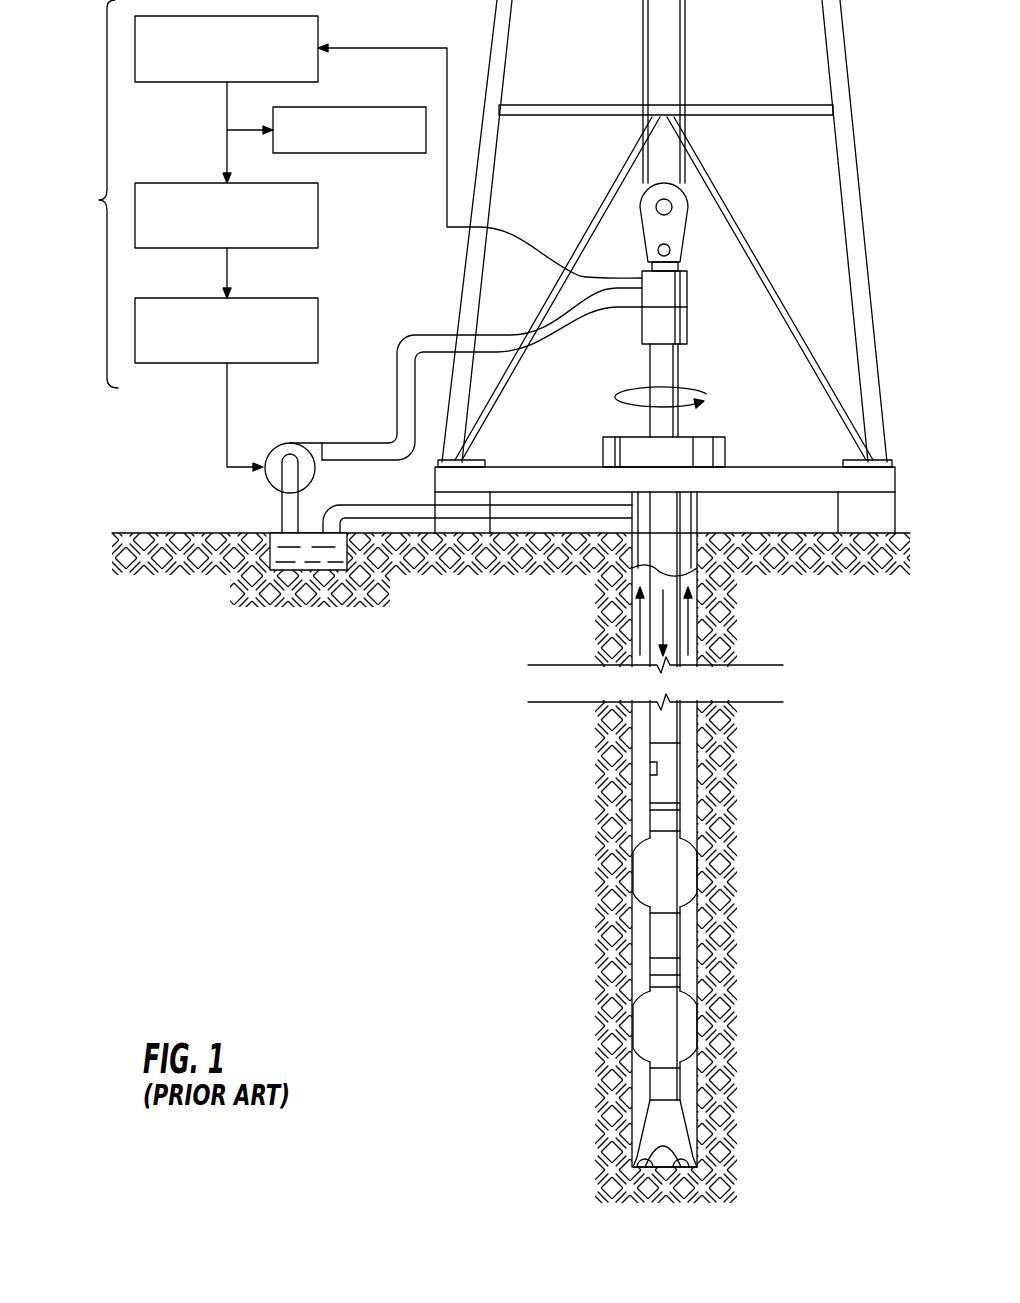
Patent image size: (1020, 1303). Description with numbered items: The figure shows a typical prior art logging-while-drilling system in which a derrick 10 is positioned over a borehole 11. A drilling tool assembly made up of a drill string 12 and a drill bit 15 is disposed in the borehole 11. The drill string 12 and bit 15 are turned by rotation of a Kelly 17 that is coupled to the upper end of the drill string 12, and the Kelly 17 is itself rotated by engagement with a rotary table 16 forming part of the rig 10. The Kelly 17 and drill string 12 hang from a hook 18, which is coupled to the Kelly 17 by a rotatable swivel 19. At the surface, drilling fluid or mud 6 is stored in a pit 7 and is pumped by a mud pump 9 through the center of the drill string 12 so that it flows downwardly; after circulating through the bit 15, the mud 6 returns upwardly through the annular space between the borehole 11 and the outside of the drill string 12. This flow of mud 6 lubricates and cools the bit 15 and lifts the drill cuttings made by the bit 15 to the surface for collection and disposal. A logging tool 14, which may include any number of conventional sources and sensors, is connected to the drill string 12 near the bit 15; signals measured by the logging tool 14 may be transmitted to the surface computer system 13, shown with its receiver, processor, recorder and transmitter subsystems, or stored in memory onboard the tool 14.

The drilling fluid (mud) 6 is at (308, 563).
The pit 7 is at (268, 545).
The mud pump 9 is at (300, 442).
The derrick 10 is at (431, 307).
The borehole 11 is at (694, 793).
The drill string 12 is at (676, 727).
The surface computer system 13 is at (100, 200).
The logging tool 14 is at (763, 1078).
The drill bit 15 is at (680, 1132).
The rotary table 16 is at (706, 437).
The Kelly 17 is at (678, 363).
The hook 18 is at (690, 245).
The swivel 19 is at (688, 322).